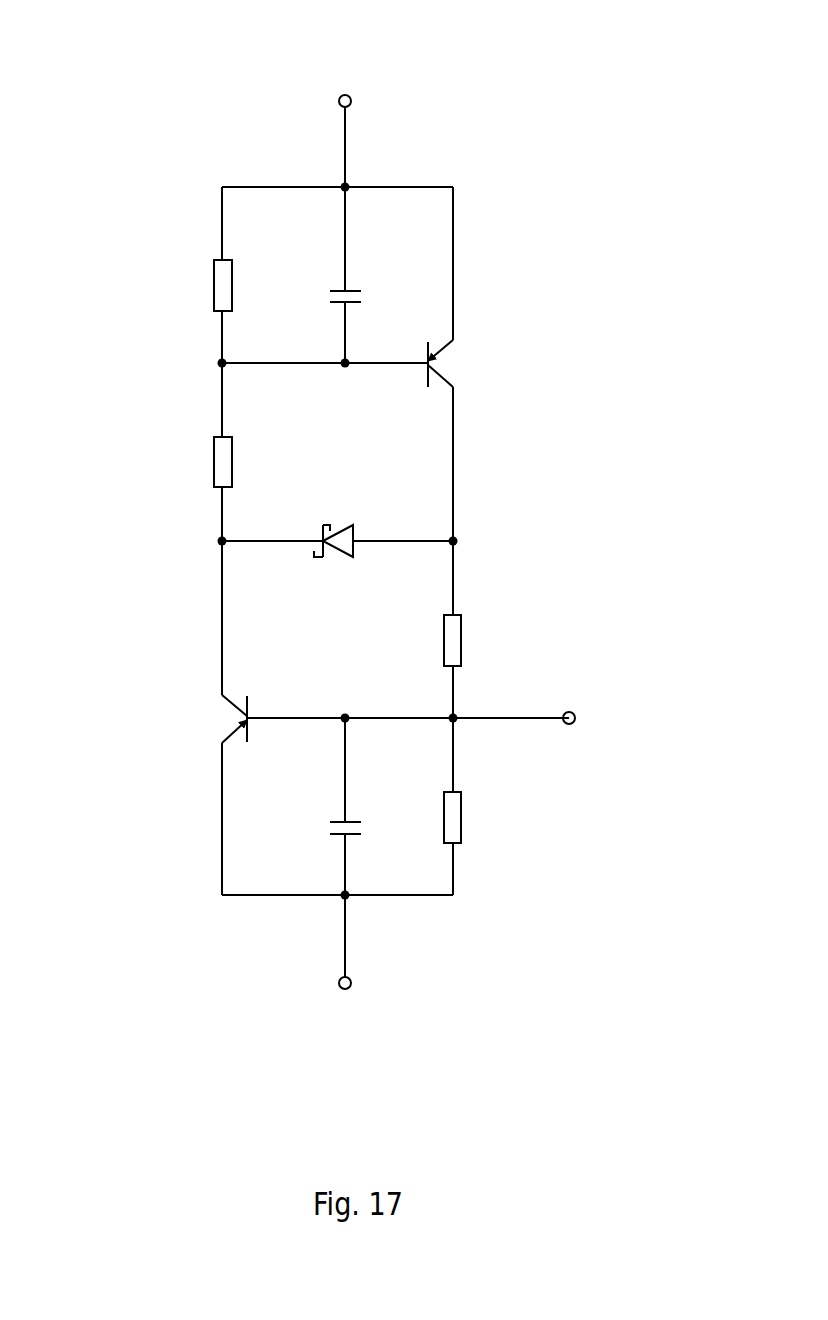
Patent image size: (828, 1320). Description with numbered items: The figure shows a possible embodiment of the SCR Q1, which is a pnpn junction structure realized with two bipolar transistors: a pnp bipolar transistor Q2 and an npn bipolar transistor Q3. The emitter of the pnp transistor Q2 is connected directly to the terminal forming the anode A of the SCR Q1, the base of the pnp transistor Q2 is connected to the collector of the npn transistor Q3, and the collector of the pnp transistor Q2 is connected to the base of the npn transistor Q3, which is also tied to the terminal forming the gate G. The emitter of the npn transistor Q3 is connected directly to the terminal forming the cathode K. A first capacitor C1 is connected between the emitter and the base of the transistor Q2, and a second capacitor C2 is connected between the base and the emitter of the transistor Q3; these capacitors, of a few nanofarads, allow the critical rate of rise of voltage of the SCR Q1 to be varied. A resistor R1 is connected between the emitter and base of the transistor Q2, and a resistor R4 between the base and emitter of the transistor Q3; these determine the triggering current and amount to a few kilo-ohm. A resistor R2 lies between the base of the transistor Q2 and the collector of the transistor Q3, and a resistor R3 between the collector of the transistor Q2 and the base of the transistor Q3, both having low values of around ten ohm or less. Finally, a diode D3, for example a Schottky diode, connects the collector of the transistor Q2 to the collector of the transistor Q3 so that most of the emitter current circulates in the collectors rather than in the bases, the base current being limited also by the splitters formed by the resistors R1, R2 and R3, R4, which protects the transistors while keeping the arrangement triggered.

The SCR Q1 is at (498, 76).
The resistor R1 is at (225, 257).
The first capacitor C1 is at (340, 285).
The pnp bipolar transistor Q2 is at (461, 368).
The resistor R2 is at (225, 435).
The diode D3 is at (337, 520).
The resistor R3 is at (455, 612).
The resistor R4 is at (455, 790).
The npn bipolar transistor Q3 is at (217, 719).
The second capacitor C2 is at (340, 816).
The anode A is at (362, 103).
The gate G is at (586, 720).
The cathode K is at (362, 984).